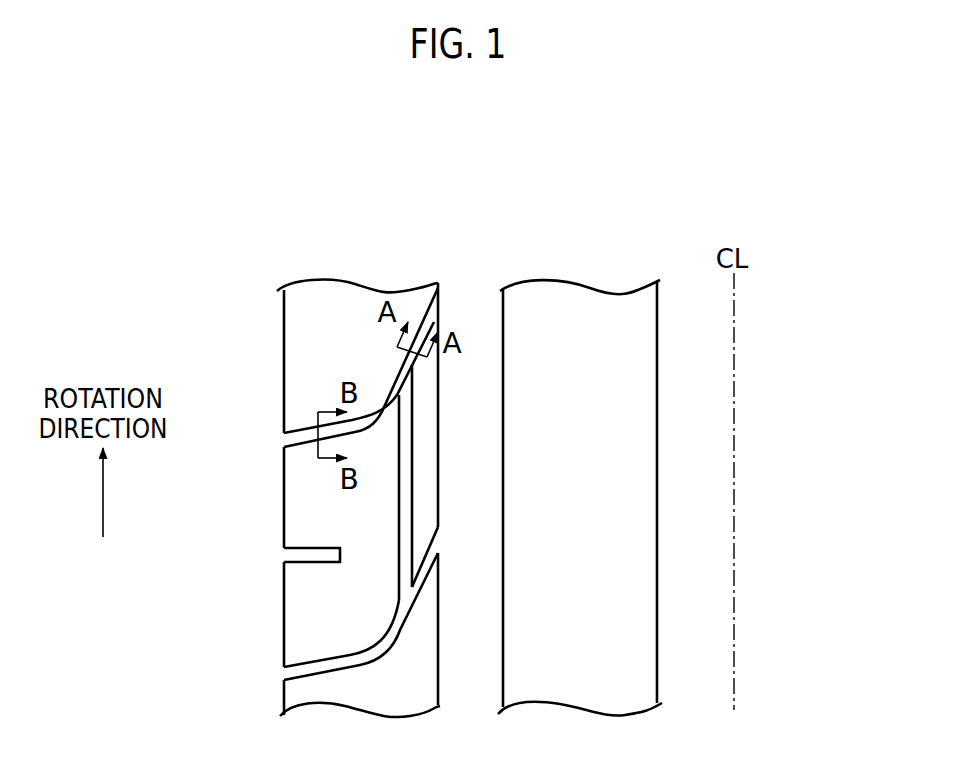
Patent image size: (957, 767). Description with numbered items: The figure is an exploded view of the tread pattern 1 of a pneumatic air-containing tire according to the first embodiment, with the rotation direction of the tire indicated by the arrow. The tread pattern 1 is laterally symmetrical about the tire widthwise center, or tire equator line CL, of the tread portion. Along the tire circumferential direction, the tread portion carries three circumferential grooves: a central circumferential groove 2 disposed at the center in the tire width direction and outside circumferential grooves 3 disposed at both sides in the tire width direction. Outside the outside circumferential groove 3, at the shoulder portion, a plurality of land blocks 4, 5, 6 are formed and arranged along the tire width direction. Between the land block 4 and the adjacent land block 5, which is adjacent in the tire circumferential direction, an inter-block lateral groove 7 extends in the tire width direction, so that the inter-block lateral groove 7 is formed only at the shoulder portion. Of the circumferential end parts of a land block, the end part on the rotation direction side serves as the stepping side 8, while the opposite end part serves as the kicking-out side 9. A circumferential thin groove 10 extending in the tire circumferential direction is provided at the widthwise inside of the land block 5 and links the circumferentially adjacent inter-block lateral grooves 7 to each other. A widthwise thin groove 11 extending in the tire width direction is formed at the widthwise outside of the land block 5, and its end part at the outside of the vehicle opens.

The tread pattern 1 is at (830, 288).
The central circumferential groove 2 is at (690, 338).
The outside circumferential groove 3 is at (470, 392).
The land block 4 is at (282, 348).
The land block 5 is at (282, 513).
The land block 6 is at (298, 698).
The inter-block lateral groove 7 is at (378, 416).
The stepping side 8 is at (295, 463).
The kicking-out side 9 is at (294, 426).
The circumferential thin groove 10 is at (403, 484).
The widthwise thin groove 11 is at (302, 553).